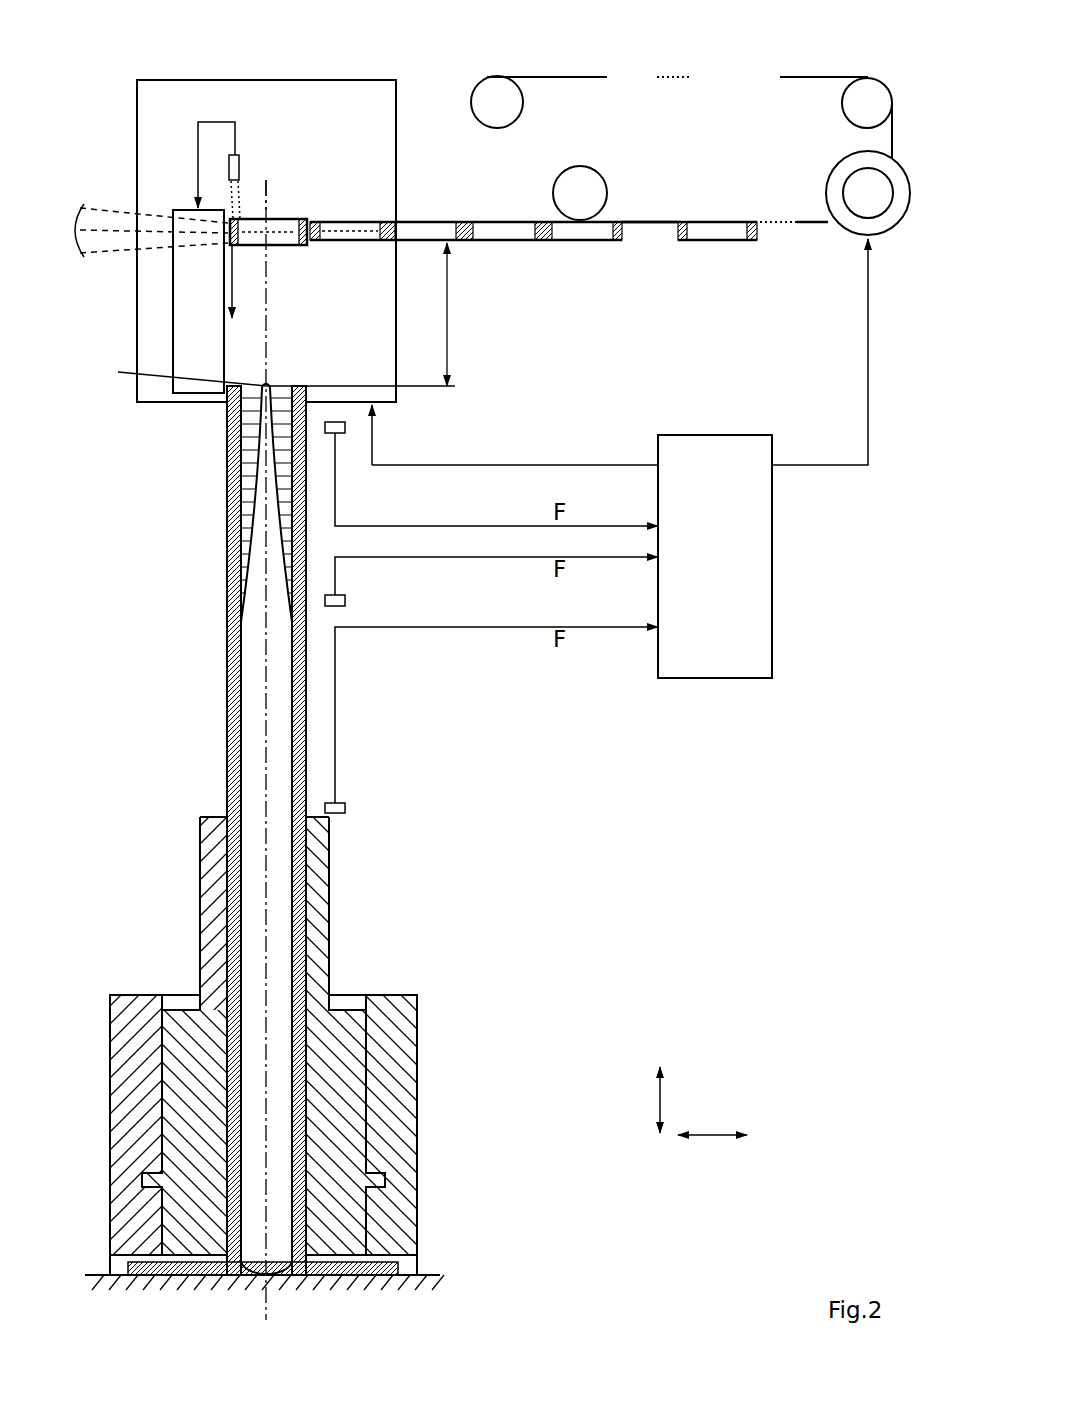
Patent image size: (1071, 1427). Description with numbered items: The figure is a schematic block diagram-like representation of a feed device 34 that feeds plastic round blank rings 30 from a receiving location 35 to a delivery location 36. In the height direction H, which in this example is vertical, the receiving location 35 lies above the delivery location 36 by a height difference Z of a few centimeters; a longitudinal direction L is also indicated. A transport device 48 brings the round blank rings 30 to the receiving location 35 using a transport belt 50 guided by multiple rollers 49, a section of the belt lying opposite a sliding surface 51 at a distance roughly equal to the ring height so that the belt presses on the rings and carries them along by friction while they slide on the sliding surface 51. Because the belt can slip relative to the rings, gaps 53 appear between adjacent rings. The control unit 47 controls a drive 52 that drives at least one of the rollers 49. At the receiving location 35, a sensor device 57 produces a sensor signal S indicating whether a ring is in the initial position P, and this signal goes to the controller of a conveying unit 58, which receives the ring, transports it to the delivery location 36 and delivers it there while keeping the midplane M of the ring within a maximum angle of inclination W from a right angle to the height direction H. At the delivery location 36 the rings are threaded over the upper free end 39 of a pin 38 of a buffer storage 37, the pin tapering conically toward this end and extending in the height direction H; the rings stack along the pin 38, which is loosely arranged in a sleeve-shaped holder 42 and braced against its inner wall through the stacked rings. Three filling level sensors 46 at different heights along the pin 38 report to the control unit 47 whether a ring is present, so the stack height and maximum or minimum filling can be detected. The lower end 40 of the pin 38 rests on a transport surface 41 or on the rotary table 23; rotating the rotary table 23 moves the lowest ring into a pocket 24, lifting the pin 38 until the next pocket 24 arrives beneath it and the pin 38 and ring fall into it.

The rotary table 23 is at (180, 1275).
The pocket 24 is at (303, 1275).
The round blank ring 30 is at (487, 228).
The feed device 34 is at (359, 75).
The receiving location 35 is at (295, 214).
The delivery location 36 is at (277, 375).
The buffer storage 37 is at (214, 455).
The pin 38 is at (252, 622).
The upper free end 39 is at (190, 375).
The lower end 40 is at (262, 1277).
The transport surface 41 is at (428, 1275).
The sleeve-shaped holder 42 is at (395, 991).
The filling level sensor 46 is at (333, 428).
The control unit 47 is at (731, 574).
The transport device 48 is at (798, 74).
The roller 49 is at (565, 184).
The transport belt 50 is at (570, 76).
The sliding surface 51 is at (658, 243).
The drive 52 is at (895, 178).
The gap 53 is at (640, 233).
The sensor device 57 is at (237, 157).
The conveying unit 58 is at (183, 323).
The maximum angle of inclination W is at (85, 217).
The midplane M is at (108, 236).
The sensor signal S is at (204, 165).
The initial position P is at (273, 203).
The height difference Z is at (449, 325).
The height direction H is at (658, 1091).
The longitudinal direction L is at (717, 1136).